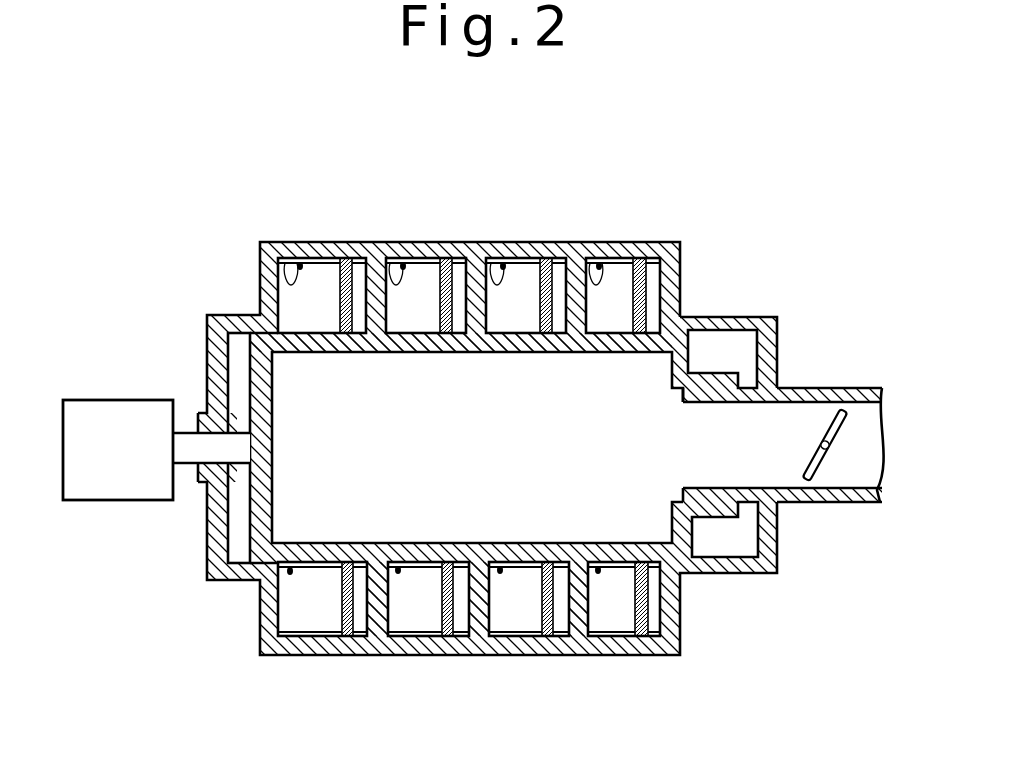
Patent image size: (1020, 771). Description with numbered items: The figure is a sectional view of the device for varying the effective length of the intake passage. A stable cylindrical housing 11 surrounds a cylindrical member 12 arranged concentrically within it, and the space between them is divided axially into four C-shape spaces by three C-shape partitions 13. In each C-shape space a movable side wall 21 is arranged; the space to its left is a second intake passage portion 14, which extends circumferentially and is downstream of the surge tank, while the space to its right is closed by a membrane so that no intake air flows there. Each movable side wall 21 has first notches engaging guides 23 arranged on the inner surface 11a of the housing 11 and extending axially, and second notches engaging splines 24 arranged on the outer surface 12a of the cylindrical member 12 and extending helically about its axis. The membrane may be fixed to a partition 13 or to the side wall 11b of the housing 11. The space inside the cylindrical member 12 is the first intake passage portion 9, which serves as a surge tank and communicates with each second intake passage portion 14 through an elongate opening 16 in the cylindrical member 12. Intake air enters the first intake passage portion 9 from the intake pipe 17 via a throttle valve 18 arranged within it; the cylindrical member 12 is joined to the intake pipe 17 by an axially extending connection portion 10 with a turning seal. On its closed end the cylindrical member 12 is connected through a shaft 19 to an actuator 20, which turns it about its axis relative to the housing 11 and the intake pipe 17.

The first intake passage portion 9 is at (645, 468).
The connection portion 10 is at (720, 507).
The housing 11 is at (668, 243).
The inner surface of the housing 11a is at (596, 262).
The side wall of the housing 11b is at (677, 291).
The cylindrical member 12 is at (490, 548).
The outer surface of the cylindrical member 12a is at (598, 712).
The partition 13 is at (582, 580).
The second intake passage portion 14 is at (318, 315).
The opening 16 is at (478, 345).
The intake pipe 17 is at (840, 388).
The throttle valve 18 is at (840, 428).
The shaft 19 is at (188, 455).
The actuator 20 is at (93, 500).
The movable side wall 21 is at (628, 374).
The guide 23 is at (623, 263).
The spline 24 is at (632, 672).